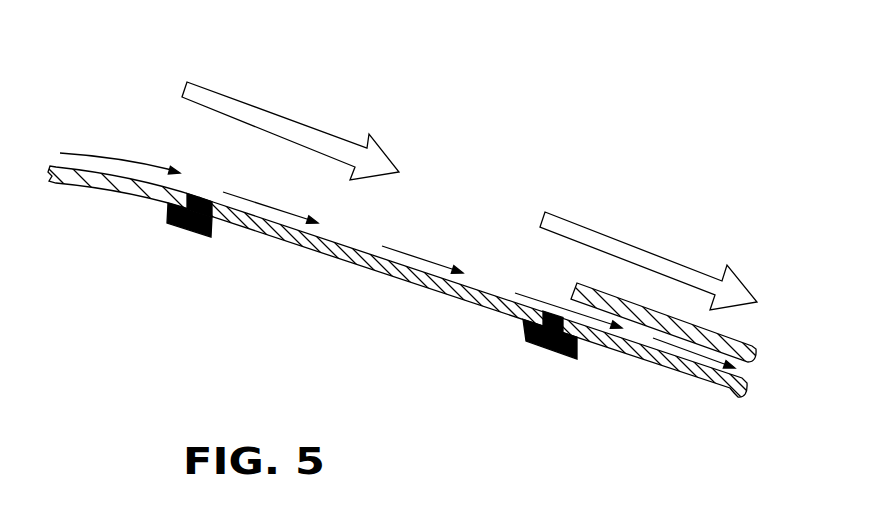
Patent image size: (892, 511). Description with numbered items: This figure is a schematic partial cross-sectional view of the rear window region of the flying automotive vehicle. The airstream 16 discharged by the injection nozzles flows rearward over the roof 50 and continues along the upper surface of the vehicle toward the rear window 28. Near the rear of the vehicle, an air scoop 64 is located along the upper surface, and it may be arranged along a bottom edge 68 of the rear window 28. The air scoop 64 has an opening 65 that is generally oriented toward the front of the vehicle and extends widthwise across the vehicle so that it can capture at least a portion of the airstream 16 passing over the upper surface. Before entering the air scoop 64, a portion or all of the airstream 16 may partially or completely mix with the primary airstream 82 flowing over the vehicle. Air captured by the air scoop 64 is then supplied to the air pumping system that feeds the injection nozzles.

The primary airstream 82 is at (265, 117).
The air scoop 64 is at (608, 292).
The opening 65 is at (577, 308).
The airstream 16 is at (410, 256).
The rear window 28 is at (337, 258).
The roof 50 is at (85, 183).
The bottom edge 68 is at (483, 310).